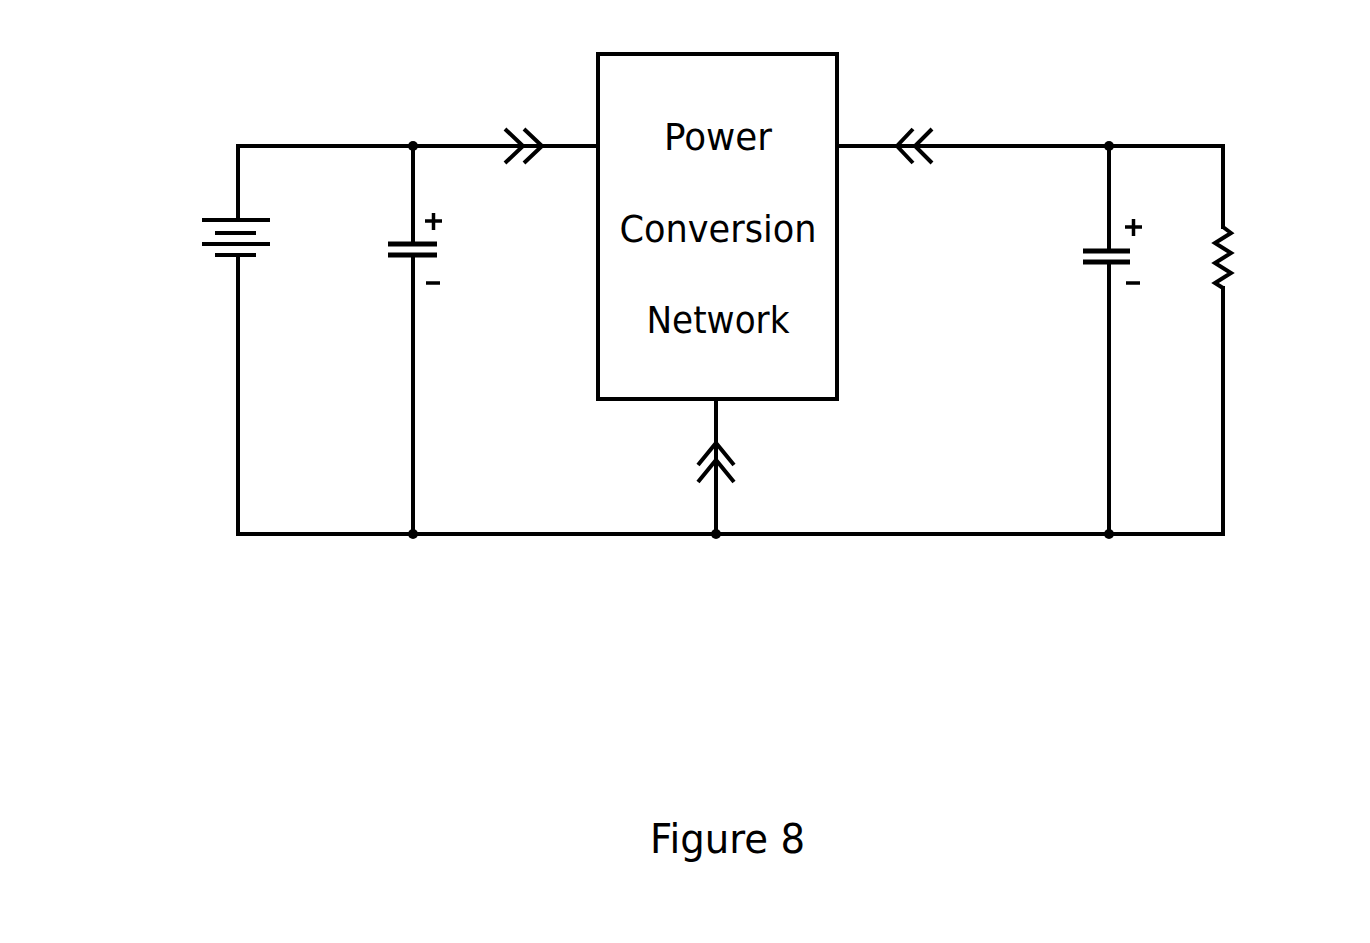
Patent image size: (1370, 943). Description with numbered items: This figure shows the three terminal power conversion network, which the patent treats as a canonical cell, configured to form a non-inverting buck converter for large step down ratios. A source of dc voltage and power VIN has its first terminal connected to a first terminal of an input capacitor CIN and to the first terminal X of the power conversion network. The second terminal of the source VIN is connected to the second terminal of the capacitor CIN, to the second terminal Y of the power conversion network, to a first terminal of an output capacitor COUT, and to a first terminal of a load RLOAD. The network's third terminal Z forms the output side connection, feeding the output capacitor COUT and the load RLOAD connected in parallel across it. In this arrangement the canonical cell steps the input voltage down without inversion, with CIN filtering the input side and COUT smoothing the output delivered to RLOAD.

The source of dc voltage and power VIN is at (205, 237).
The input capacitor CIN is at (387, 248).
The output capacitor COUT is at (1065, 253).
The load RLOAD is at (1277, 258).
The first terminal of the power conversion network X is at (522, 117).
The second terminal of the power conversion network Y is at (735, 467).
The third terminal of the power conversion network Z is at (914, 116).